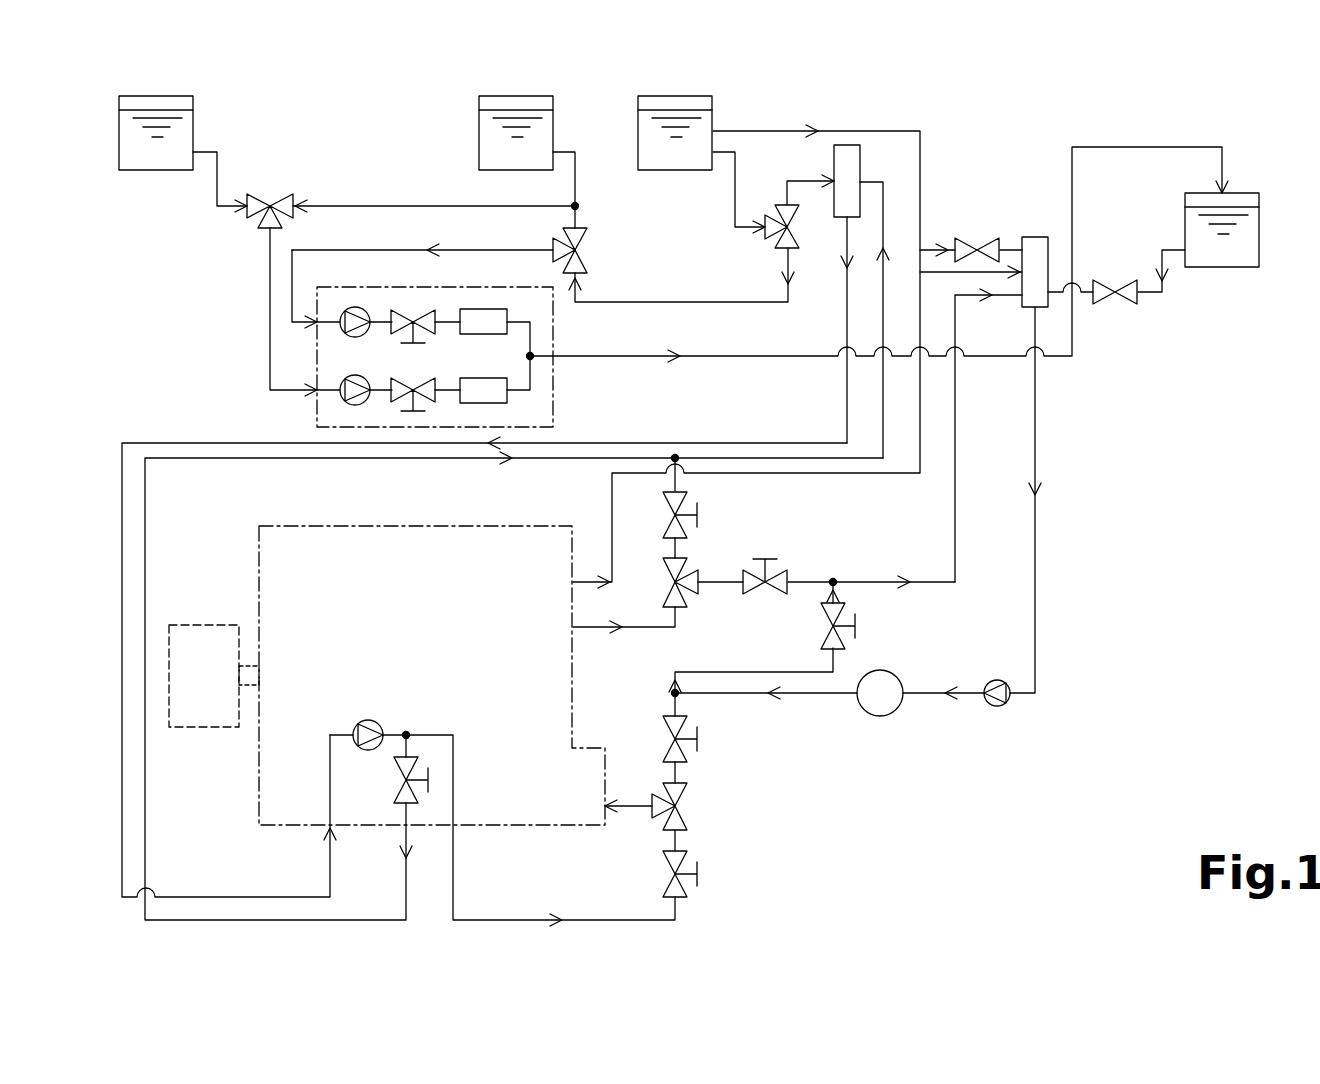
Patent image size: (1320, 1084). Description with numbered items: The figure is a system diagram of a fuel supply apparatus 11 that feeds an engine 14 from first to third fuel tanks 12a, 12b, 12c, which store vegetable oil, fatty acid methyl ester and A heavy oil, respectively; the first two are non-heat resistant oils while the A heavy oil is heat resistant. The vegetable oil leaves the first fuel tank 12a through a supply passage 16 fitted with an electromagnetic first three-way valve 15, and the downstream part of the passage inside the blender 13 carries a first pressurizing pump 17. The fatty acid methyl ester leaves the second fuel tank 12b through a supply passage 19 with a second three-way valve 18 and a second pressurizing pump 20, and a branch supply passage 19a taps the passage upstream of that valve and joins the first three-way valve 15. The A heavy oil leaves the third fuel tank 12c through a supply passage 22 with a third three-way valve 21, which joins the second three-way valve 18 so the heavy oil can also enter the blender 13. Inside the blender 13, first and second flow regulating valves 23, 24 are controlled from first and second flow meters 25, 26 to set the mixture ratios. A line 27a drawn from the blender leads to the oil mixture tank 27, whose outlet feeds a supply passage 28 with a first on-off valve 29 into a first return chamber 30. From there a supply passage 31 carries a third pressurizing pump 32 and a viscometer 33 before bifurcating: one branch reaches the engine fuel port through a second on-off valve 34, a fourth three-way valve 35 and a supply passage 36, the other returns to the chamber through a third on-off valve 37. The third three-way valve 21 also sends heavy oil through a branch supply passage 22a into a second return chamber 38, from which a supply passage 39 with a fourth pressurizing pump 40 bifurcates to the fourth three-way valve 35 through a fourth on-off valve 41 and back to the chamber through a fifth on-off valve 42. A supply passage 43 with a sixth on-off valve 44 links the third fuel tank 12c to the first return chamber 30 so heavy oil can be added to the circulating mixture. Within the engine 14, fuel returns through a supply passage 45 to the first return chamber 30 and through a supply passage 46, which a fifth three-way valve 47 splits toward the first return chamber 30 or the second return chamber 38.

The fuel supply apparatus 11 is at (1062, 778).
The first fuel tank 12a is at (118, 144).
The second fuel tank 12b is at (478, 129).
The third fuel tank 12c is at (637, 129).
The blender 13 is at (553, 390).
The engine 14 is at (516, 832).
The first three-way valve 15 is at (272, 201).
The supply passage 16 is at (268, 358).
The first pressurizing pump 17 is at (348, 377).
The second three-way valve 18 is at (588, 253).
The supply passage 19 is at (464, 250).
The branch supply passage 19a is at (384, 204).
The second pressurizing pump 20 is at (348, 306).
The third three-way valve 21 is at (768, 240).
The supply passage 22 is at (690, 300).
The branch supply passage 22a is at (798, 180).
The first flow regulating valve 23 is at (418, 378).
The second flow regulating valve 24 is at (409, 308).
The first flow meter 25 is at (484, 378).
The second flow meter 26 is at (482, 308).
The oil mixture tank 27 is at (1224, 268).
The return pipe 27a is at (734, 354).
The supply passage 28 is at (1154, 296).
The first on-off valve 29 is at (1111, 304).
The first return chamber 30 is at (1035, 237).
The supply passage 31 is at (1037, 455).
The third pressurizing pump 32 is at (994, 708).
The viscometer 33 is at (882, 716).
The second on-off valve 34 is at (661, 731).
The fourth three-way valve 35 is at (688, 798).
The supply passage 36 is at (634, 808).
The third on-off valve 37 is at (823, 637).
The second return chamber 38 is at (860, 158).
The supply passage 39 is at (846, 306).
The fourth pressurizing pump 40 is at (378, 723).
The fourth on-off valve 41 is at (663, 883).
The fifth on-off valve 42 is at (394, 785).
The supply passage 43 is at (920, 163).
The sixth on-off valve 44 is at (982, 237).
The supply passage 45 is at (612, 501).
The supply passage 46 is at (648, 628).
The fifth three-way valve 47 is at (663, 589).